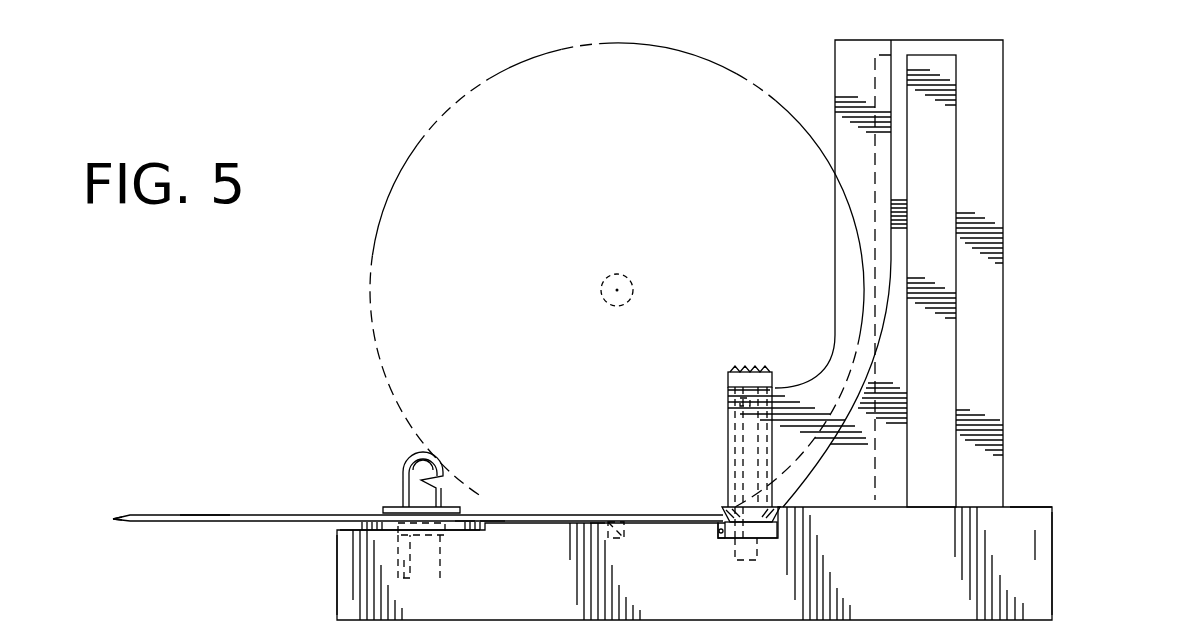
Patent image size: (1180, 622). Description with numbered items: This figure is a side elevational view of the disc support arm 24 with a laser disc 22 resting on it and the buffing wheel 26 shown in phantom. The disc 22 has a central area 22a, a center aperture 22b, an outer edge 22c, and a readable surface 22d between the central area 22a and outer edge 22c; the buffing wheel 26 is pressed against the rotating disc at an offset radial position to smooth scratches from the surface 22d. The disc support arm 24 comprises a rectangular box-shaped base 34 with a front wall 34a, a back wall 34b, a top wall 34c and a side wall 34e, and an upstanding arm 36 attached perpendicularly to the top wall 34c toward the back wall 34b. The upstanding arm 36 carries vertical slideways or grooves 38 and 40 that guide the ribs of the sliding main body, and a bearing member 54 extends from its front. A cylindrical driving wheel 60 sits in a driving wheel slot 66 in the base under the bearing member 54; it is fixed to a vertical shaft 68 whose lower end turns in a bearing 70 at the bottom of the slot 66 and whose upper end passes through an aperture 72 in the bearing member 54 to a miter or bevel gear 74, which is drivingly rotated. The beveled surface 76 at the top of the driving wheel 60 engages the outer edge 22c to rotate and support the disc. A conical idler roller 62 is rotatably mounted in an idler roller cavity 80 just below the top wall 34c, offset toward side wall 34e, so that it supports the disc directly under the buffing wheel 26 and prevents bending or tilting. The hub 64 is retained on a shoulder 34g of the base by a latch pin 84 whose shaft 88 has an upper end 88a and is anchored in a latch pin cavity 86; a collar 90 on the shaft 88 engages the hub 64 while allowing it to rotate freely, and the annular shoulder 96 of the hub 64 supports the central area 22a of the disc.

The laser disc 22 is at (108, 505).
The central area 22a is at (485, 515).
The center aperture 22b is at (472, 513).
The outer edge 22c is at (115, 522).
The optical or laser readable surface 22d is at (203, 514).
The disc support arm 24 is at (1082, 470).
The buffing wheel 26 is at (488, 80).
The base 34 is at (1042, 604).
The front wall 34a is at (337, 578).
The back wall 34b is at (1052, 587).
The top wall 34c is at (1035, 502).
The side wall 34e is at (1025, 542).
The shoulder 34g is at (345, 528).
The upstanding arm 36 is at (990, 55).
The slideway or groove 38 is at (935, 65).
The slideway or groove 40 is at (880, 106).
The bearing member 54 is at (778, 386).
The disc driving wheel 60 is at (770, 540).
The idler roller 62 is at (615, 540).
The hub 64 is at (480, 536).
The driving wheel slot 66 is at (720, 533).
The shaft 68 is at (750, 440).
The bearing 70 is at (745, 560).
The aperture 72 is at (735, 397).
The miter or bevel gear 74 is at (728, 370).
The beveled surface 76 is at (724, 502).
The idler roller cavity 80 is at (603, 530).
The latch pin 84 is at (392, 468).
The latch pin cavity 86 is at (412, 560).
The latch pin shaft 88 is at (438, 555).
The upper end 88a is at (418, 458).
The collar 90 is at (440, 508).
The annular shoulder 96 is at (365, 521).